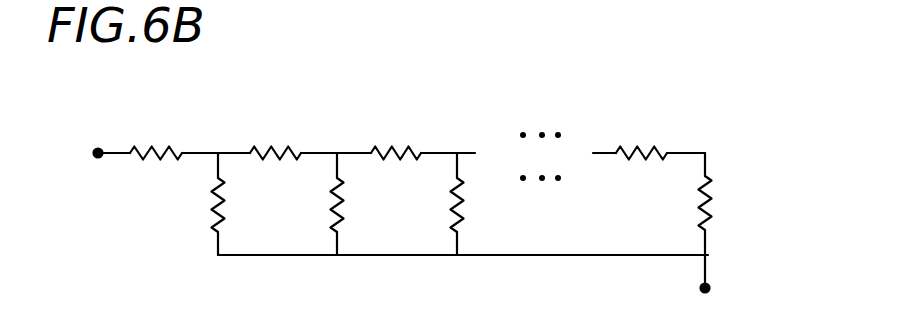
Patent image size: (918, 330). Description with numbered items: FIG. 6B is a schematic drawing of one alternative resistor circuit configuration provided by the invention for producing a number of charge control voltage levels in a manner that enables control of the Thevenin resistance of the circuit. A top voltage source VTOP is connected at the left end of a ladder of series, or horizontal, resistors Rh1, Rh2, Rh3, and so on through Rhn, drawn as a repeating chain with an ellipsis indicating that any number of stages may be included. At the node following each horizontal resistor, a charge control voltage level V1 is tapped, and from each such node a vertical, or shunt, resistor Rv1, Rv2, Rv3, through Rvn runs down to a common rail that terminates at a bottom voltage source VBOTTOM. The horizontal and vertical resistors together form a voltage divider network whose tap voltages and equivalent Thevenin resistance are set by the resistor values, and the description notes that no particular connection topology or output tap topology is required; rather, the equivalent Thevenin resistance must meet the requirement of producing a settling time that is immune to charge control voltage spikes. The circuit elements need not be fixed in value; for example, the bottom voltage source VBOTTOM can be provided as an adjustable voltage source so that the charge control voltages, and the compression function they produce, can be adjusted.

The top voltage source VTOP is at (85, 133).
The bottom voltage source VBOTTOM is at (761, 287).
The charge control voltage level V1 is at (460, 125).
The first horizontal resistor Rh1 is at (190, 174).
The second horizontal resistor Rh2 is at (310, 174).
The third horizontal resistor Rh3 is at (423, 174).
The nth horizontal resistor Rhn is at (649, 174).
The first vertical resistor Rv1 is at (192, 204).
The second vertical resistor Rv2 is at (314, 204).
The third vertical resistor Rv3 is at (434, 204).
The nth vertical resistor Rvn is at (732, 204).